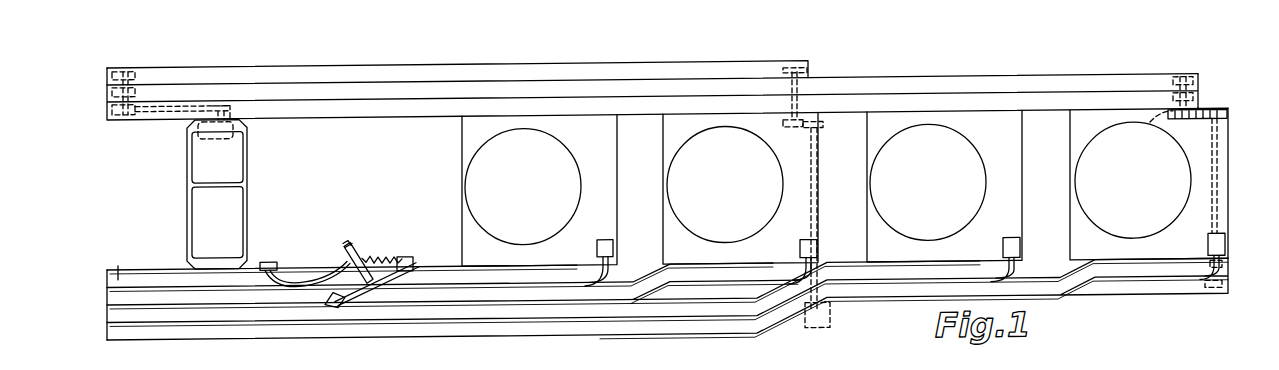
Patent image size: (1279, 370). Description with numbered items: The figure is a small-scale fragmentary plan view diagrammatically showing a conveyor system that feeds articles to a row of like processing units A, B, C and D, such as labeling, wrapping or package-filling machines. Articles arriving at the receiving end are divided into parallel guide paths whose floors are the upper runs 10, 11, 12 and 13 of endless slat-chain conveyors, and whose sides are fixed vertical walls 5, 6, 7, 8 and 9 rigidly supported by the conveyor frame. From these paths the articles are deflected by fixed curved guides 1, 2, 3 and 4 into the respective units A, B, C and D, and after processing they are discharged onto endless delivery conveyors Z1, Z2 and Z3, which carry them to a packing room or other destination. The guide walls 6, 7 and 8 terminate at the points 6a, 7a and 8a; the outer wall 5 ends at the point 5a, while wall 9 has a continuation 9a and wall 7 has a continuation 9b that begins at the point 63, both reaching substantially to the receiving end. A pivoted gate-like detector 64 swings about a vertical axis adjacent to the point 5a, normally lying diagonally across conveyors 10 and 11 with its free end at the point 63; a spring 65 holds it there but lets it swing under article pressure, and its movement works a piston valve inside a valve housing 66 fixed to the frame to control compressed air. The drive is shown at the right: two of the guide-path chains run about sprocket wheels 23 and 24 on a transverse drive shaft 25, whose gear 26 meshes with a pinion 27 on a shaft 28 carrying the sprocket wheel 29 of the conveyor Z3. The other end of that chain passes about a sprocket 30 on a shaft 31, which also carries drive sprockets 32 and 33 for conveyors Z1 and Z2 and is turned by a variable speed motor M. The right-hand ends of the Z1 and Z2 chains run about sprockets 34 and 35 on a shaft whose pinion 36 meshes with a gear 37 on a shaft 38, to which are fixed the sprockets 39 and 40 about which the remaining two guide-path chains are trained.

The fixed curved guide 1 is at (596, 253).
The fixed curved guide 2 is at (791, 268).
The fixed curved guide 3 is at (993, 275).
The fixed curved guide 4 is at (1200, 275).
The fixed outer wall 5 is at (522, 256).
The terminal point of wall 5 5a is at (418, 269).
The fixed vertical guide wall 6 is at (545, 290).
The terminal point of guide wall 6 6a is at (470, 287).
The fixed vertical guide wall 7 is at (548, 310).
The terminal point of guide wall 7 7a is at (487, 330).
The fixed vertical guide wall 8 is at (585, 322).
The terminal point of guide wall 8 8a is at (492, 312).
The fixed wall 9 is at (625, 342).
The continuation of fixed wall 9 9a is at (262, 342).
The continuation of fixed wall 7 9b is at (163, 308).
The upper run of endless conveyor 10 is at (118, 270).
The upper run of endless conveyor 11 is at (140, 300).
The upper run of endless conveyor 12 is at (195, 315).
The upper run of endless conveyor 13 is at (222, 333).
The sprocket wheel 23 is at (832, 314).
The sprocket wheel 24 is at (832, 322).
The transverse drive shaft 25 is at (818, 215).
The gear 26 is at (823, 132).
The pinion 27 is at (783, 130).
The shaft 28 is at (806, 92).
The sprocket wheel 29 is at (800, 75).
The sprocket 30 is at (140, 78).
The shaft 31 is at (130, 70).
The drive sprocket 32 is at (113, 108).
The drive sprocket 33 is at (120, 72).
The sprocket 34 is at (1173, 110).
The sprocket 35 is at (1172, 88).
The pinion 36 is at (1165, 124).
The gear 37 is at (1215, 121).
The shaft 38 is at (1218, 182).
The sprocket 39 is at (1225, 276).
The sprocket 40 is at (1225, 297).
The point 63 is at (360, 320).
The pivoted gate-like detector 64 is at (392, 274).
The spring 65 is at (365, 254).
The valve housing 66 is at (350, 258).
The variable speed motor M is at (247, 148).
The processing unit A is at (539, 191).
The processing unit B is at (740, 189).
The processing unit C is at (944, 186).
The processing unit D is at (1149, 184).
The endless conveyor belt Z1 is at (947, 106).
The endless conveyor belt Z2 is at (888, 92).
The endless conveyor belt Z3 is at (730, 70).